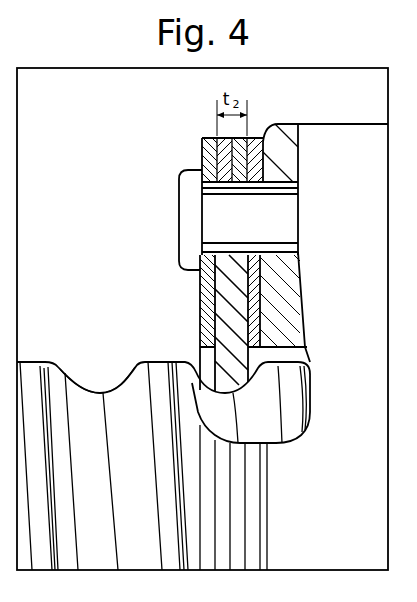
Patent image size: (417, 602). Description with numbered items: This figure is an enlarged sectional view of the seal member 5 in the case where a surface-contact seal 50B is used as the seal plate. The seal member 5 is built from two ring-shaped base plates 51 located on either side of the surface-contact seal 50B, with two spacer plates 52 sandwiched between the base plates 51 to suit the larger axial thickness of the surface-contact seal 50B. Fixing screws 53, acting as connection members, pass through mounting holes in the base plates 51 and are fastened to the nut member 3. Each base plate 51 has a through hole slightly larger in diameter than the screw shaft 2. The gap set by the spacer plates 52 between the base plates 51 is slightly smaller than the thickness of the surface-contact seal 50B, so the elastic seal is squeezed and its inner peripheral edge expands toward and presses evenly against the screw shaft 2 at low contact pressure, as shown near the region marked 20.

The screw shaft 2 is at (42, 360).
The groove 20 is at (85, 372).
The nut member 3 is at (274, 125).
The seal member 5 is at (176, 166).
The spacer plates 52 is at (202, 165).
The fixing screws 53 is at (186, 212).
The base plates 51 is at (197, 307).
The surface-contact seal 50B is at (200, 332).